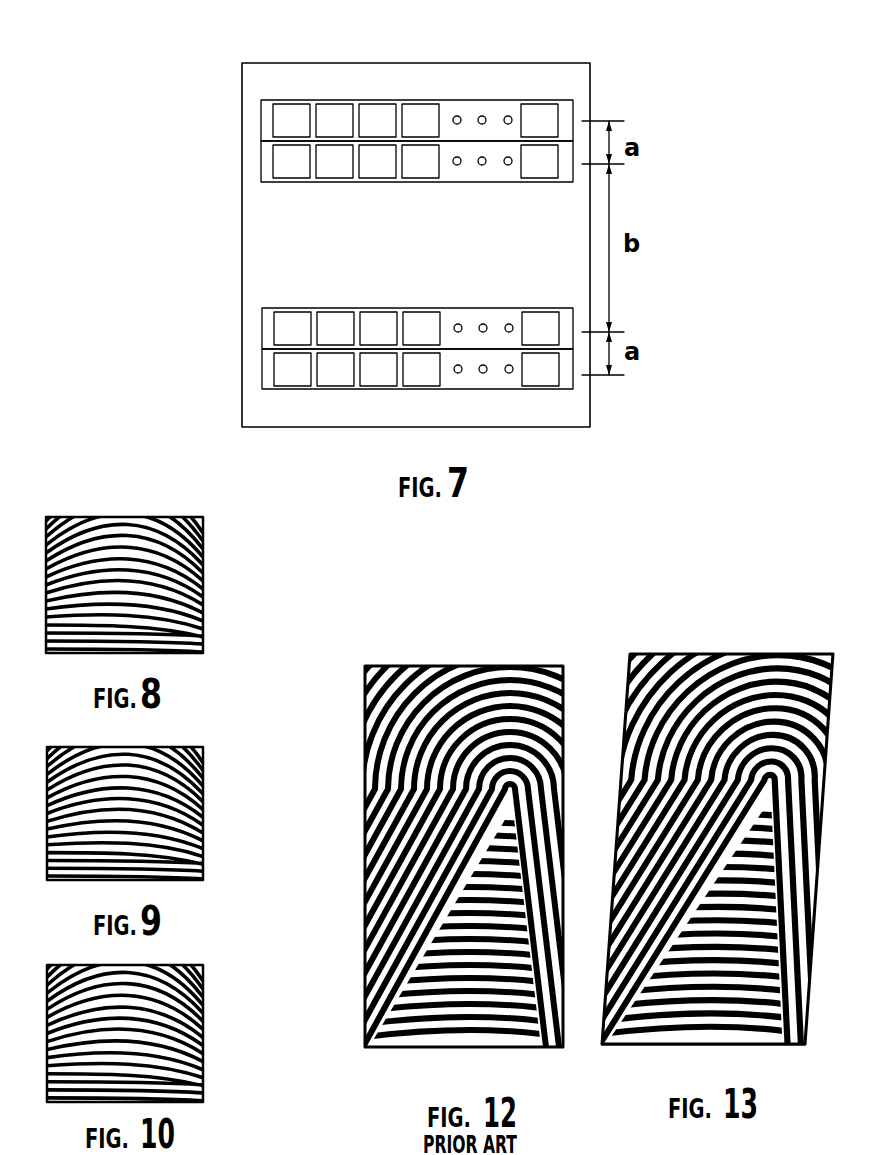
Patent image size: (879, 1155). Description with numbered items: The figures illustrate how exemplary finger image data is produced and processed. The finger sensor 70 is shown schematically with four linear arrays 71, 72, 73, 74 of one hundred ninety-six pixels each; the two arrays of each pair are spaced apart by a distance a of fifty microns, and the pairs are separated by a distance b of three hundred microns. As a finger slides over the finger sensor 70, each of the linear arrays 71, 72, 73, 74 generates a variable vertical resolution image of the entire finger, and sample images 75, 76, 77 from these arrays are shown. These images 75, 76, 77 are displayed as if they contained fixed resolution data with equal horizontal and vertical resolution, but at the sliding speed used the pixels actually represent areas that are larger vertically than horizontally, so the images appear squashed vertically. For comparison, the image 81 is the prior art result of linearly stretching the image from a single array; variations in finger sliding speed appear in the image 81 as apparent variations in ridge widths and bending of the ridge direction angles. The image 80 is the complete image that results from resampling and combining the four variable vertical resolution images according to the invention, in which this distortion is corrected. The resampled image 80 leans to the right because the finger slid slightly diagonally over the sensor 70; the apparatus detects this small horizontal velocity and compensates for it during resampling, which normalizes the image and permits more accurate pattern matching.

In FIG. 7, the finger sensor 70 is at (242, 248).
In FIG. 7, the linear array 71 is at (265, 113).
In FIG. 7, the linear array 72 is at (258, 158).
In FIG. 7, the linear array 73 is at (262, 327).
In FIG. 7, the linear array 74 is at (262, 363).
In FIG. 8, the finger image 75 is at (203, 547).
In FIG. 9, the finger image 76 is at (203, 791).
In FIG. 10, the finger image 77 is at (203, 1016).
In FIG. 13, the resampled image 80 is at (743, 654).
In FIG. 12, the linearly stretched image 81 is at (465, 666).